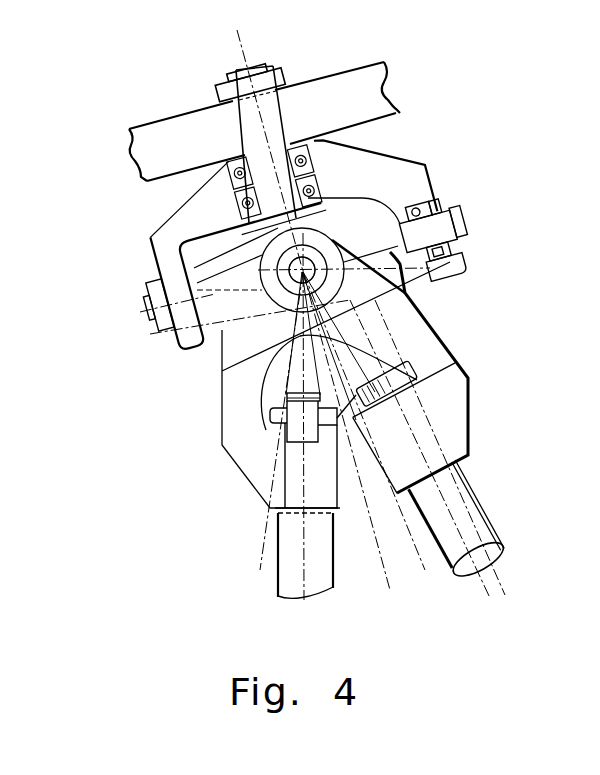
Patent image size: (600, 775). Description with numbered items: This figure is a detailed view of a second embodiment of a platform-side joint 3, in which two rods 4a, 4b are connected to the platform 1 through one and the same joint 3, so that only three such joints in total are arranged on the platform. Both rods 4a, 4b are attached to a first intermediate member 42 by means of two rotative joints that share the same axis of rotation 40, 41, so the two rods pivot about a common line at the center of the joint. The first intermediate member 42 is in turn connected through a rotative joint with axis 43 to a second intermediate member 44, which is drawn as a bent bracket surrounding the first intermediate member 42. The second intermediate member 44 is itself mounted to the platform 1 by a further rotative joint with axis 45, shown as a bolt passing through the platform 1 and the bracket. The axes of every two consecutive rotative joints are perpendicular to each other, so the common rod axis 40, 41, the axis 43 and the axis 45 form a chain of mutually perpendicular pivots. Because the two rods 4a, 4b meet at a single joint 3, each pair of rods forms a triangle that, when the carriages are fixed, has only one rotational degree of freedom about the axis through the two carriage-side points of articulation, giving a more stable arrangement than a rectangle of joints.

The platform 1 is at (327, 85).
The platform-side joint 3 is at (152, 260).
The rod 4a is at (320, 575).
The rod 4b is at (460, 560).
The axis of rotation 40 is at (330, 277).
The axis of rotation 41 is at (302, 270).
The first intermediate member 42 is at (457, 273).
The axis 43 is at (454, 208).
The second intermediate member 44 is at (345, 176).
The axis 45 is at (280, 193).